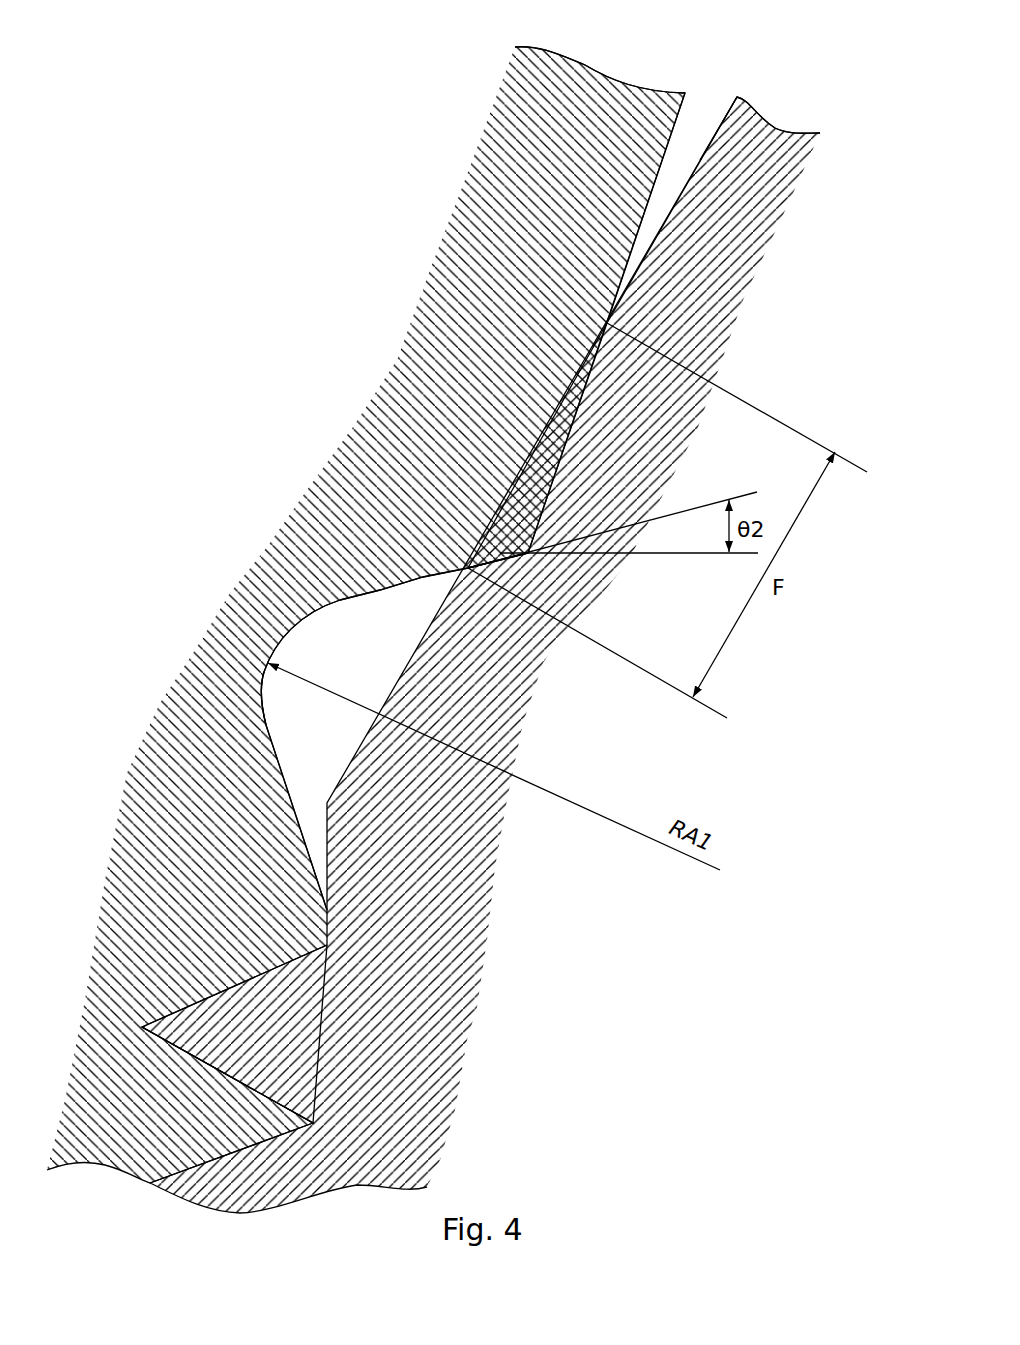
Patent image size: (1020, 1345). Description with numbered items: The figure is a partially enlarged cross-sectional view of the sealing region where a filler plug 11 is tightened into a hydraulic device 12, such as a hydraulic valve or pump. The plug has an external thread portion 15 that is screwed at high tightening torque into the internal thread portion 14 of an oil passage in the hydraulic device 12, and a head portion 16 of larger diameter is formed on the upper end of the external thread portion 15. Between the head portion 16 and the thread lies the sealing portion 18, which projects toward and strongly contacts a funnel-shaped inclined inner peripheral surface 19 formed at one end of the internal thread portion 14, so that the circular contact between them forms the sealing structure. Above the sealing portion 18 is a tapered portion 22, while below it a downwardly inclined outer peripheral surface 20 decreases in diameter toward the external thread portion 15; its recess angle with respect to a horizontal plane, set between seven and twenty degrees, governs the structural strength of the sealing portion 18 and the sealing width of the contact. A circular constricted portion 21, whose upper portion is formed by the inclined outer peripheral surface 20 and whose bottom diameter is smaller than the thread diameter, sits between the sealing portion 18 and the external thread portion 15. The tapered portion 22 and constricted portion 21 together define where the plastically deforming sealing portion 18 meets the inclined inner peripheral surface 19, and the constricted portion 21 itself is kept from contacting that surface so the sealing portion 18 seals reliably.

The filler plug 11 is at (244, 462).
The hydraulic device 12 is at (790, 190).
The internal thread portion 14 is at (266, 1096).
The external thread portion 15 is at (280, 1088).
The head portion 16 is at (617, 92).
The sealing portion 18 is at (485, 470).
The funnel-shaped inclined inner peripheral surface 19 is at (718, 120).
The inclined outer peripheral surface 20 is at (397, 587).
The circular constricted portion 21 is at (262, 700).
The tapered portion 22 is at (677, 133).